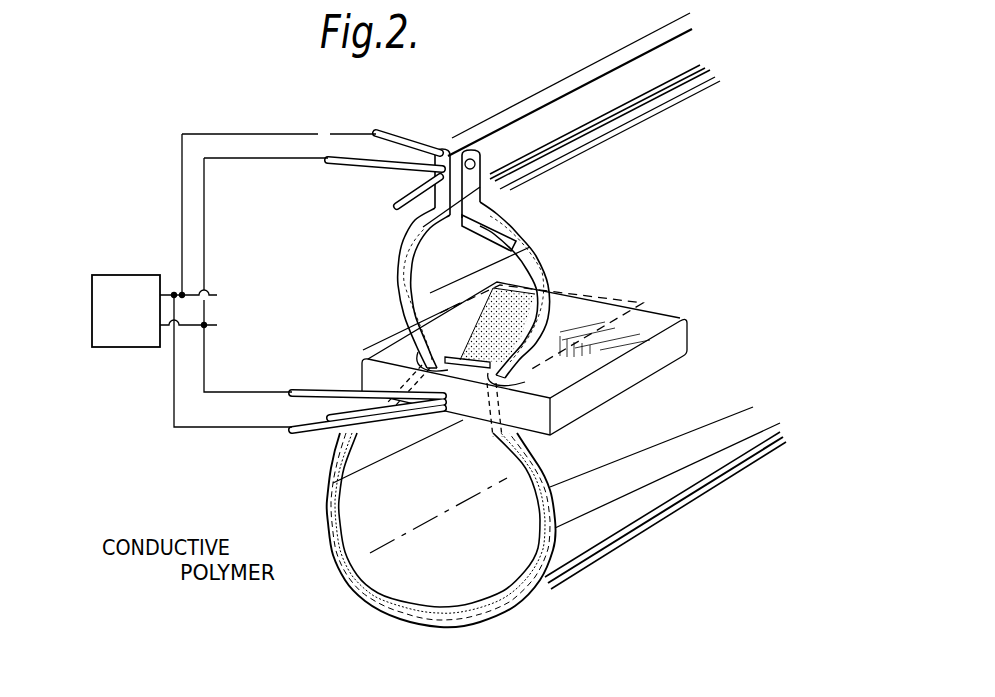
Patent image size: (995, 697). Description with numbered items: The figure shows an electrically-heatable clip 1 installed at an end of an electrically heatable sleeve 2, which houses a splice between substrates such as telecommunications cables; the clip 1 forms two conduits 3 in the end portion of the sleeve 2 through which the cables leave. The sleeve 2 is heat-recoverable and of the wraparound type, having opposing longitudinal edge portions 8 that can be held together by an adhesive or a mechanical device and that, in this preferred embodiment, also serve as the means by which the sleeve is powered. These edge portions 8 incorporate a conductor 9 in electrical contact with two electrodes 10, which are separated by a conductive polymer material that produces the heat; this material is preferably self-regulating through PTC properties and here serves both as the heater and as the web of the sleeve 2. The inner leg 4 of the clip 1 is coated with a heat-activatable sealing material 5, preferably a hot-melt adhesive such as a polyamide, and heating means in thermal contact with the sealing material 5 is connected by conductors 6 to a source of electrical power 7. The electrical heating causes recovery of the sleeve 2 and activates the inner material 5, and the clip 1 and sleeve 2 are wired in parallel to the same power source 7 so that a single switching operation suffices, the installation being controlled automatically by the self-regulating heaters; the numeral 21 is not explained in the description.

The clip 1 is at (660, 362).
The sleeve 2 is at (667, 488).
The conduits 3 is at (420, 388).
The inner leg 4 is at (612, 293).
The sealing material 5 is at (490, 330).
The conductors 6 is at (197, 437).
The source of electrical power 7 is at (115, 290).
The longitudinal edge portions 8 is at (510, 140).
The conductor 9 is at (440, 150).
The electrodes 10 is at (318, 500).
The inner layer 21 is at (328, 562).